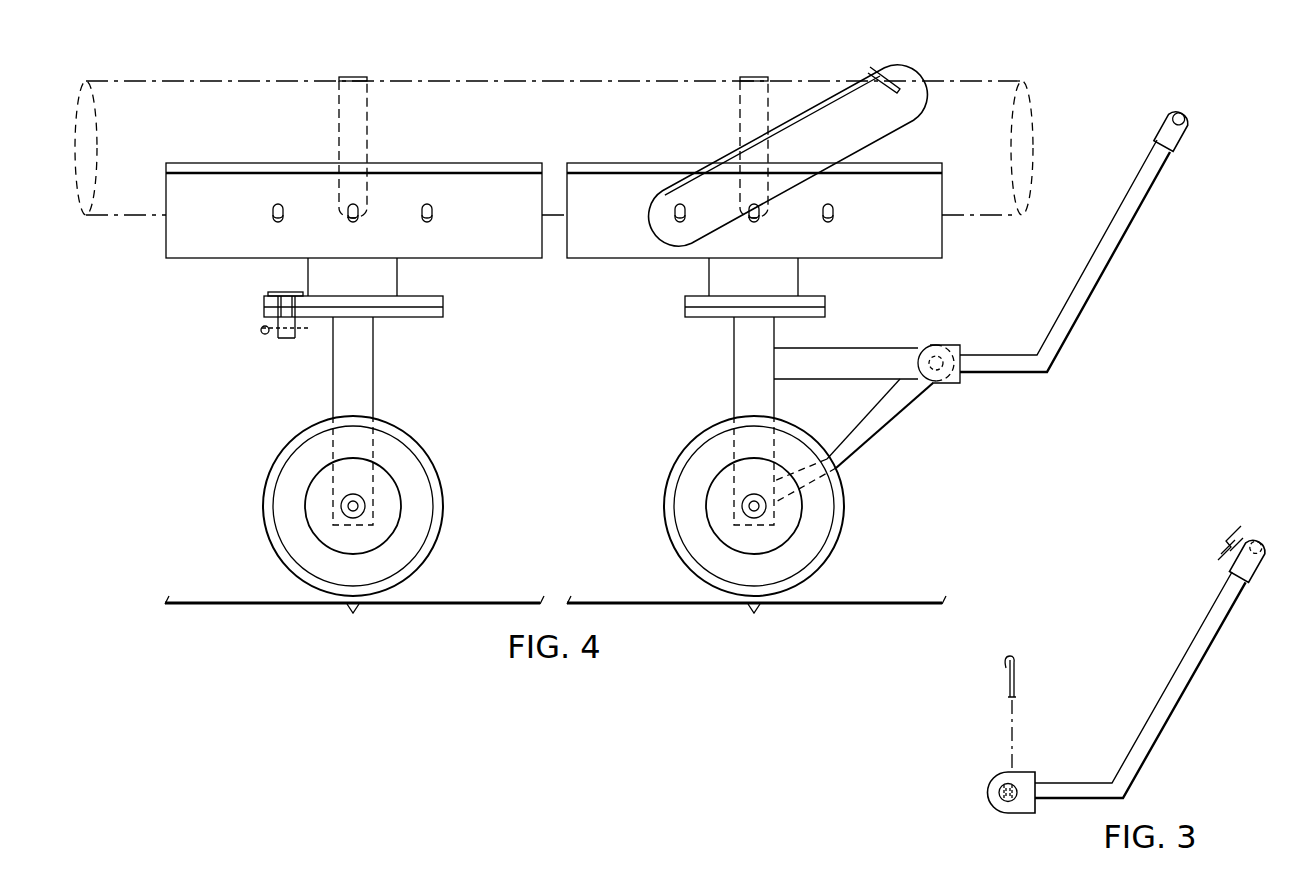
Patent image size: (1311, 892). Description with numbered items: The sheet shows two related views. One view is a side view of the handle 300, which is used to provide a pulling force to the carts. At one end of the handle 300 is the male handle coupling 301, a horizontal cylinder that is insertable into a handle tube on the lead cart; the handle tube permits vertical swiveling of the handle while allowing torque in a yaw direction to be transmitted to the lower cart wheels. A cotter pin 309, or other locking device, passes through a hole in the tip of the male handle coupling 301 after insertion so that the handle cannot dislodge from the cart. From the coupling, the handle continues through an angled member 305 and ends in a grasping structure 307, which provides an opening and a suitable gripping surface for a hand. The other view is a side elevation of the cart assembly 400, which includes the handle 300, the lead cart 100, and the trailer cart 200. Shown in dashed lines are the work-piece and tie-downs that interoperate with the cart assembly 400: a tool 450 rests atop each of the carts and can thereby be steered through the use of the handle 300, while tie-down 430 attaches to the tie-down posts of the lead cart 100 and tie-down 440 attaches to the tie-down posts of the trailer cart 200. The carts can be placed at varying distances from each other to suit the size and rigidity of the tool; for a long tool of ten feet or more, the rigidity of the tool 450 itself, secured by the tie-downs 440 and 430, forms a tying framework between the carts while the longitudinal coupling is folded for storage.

In FIG. 4, the tool 450 is at (178, 81).
In FIG. 4, the tie-down 440 is at (352, 77).
In FIG. 4, the tie-down 430 is at (754, 77).
In FIG. 4, the cart assembly 400 is at (158, 534).
In FIG. 4, the trailer cart 200 is at (354, 403).
In FIG. 4, the lead cart 100 is at (763, 354).
In FIG. 4, the handle 300 is at (1098, 289).
In FIG. 3, the male handle coupling 301 is at (990, 792).
In FIG. 3, the angled member 305 is at (1187, 688).
In FIG. 3, the grasping structure 307 is at (1227, 548).
In FIG. 3, the cotter pin 309 is at (1003, 679).